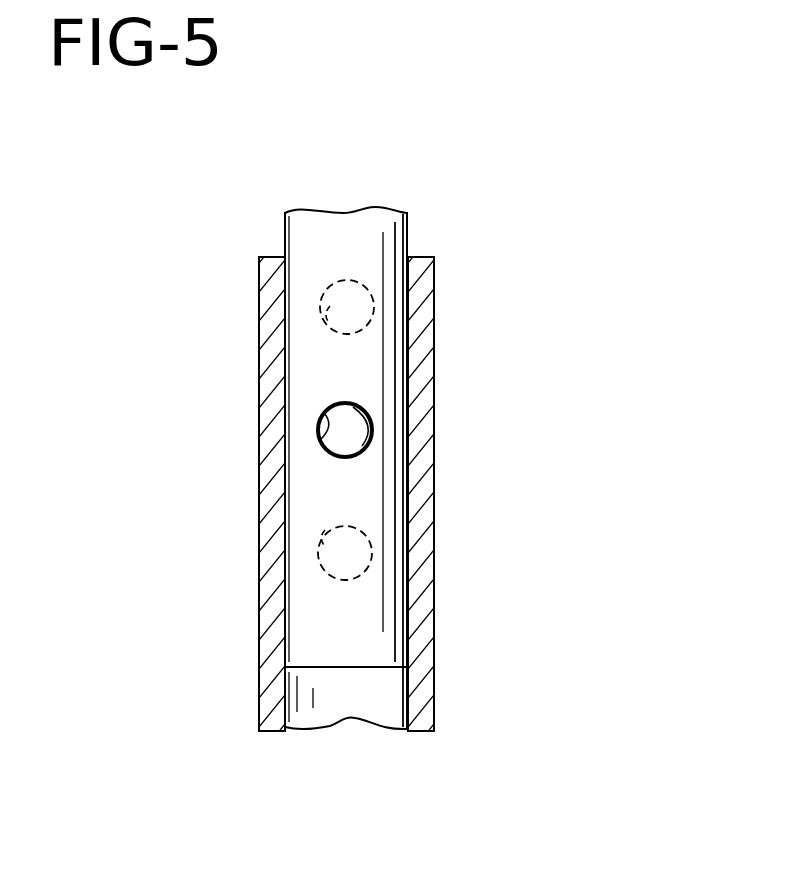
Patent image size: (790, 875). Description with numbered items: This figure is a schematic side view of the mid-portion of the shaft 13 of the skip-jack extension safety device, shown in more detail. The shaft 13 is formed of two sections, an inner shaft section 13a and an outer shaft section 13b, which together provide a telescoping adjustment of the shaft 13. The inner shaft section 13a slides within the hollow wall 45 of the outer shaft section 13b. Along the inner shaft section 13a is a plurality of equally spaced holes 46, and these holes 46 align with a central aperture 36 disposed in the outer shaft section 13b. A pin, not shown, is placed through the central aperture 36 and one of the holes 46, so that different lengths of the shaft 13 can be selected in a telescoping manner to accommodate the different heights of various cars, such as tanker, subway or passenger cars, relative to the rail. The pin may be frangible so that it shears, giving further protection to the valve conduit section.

The shaft 13 is at (585, 450).
The shaft section 13a is at (294, 232).
The shaft section 13b is at (422, 662).
The central aperture 36 is at (372, 440).
The hollow wall 45 is at (408, 372).
The holes 46 is at (328, 322).